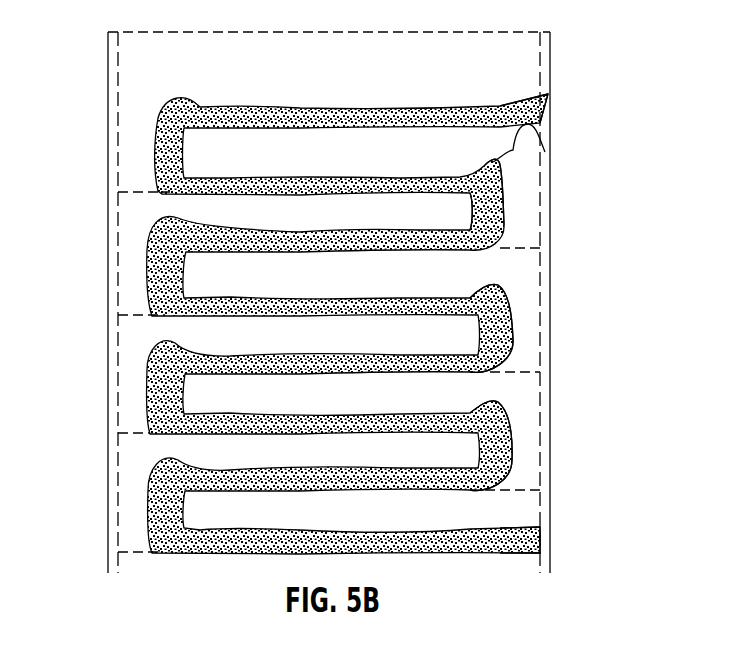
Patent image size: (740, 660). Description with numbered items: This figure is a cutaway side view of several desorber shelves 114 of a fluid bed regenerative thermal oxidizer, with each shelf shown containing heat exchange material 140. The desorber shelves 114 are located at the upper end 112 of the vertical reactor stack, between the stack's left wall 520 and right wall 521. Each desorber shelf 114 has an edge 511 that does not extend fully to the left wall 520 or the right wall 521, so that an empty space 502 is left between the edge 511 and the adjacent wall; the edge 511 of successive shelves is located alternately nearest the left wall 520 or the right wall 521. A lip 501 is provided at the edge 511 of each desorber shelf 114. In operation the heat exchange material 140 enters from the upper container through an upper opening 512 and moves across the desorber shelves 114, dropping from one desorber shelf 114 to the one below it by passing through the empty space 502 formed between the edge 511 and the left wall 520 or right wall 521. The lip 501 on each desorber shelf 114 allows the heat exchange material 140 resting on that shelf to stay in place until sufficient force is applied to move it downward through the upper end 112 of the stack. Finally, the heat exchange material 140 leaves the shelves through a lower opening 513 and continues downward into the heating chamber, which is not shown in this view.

The upper end 112 is at (108, 388).
The desorber shelf 114 is at (178, 192).
The heat exchange material 140 is at (155, 138).
The lip 501 is at (505, 410).
The empty space 502 is at (550, 128).
The edge 511 is at (512, 303).
The upper opening 512 is at (545, 100).
The lower opening 513 is at (545, 536).
The left wall 520 is at (108, 300).
The right wall 521 is at (552, 213).